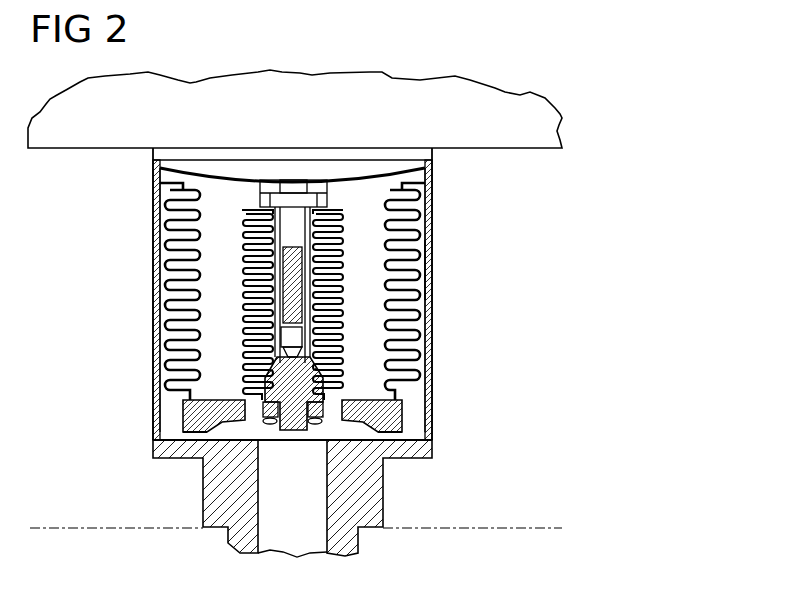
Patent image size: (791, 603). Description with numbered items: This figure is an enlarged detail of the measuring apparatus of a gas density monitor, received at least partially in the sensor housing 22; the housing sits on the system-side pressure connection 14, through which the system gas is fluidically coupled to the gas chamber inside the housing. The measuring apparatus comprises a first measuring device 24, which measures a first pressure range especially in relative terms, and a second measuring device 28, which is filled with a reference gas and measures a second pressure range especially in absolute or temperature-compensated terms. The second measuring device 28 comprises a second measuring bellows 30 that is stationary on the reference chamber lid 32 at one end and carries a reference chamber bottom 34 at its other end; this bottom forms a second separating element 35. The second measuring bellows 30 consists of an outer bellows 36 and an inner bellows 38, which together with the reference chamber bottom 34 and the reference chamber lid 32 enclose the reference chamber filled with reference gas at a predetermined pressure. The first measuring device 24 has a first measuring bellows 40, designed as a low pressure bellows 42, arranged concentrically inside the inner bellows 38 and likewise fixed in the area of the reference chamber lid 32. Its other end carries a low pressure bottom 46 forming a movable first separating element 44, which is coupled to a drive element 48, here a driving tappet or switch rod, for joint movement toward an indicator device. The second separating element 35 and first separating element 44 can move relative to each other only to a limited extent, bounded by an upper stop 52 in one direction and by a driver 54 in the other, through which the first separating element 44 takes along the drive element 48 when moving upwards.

The system-side pressure connection 14 is at (212, 494).
The sensor housing 22 is at (413, 427).
The first measuring device 24 is at (342, 305).
The second measuring device 28 is at (385, 326).
The second measuring bellows 30 is at (432, 276).
The reference chamber lid 32 is at (432, 178).
The reference chamber bottom 34 is at (200, 413).
The second separating element 35 is at (207, 422).
The outer bellows 36 is at (433, 253).
The inner bellows 38 is at (393, 305).
The first measuring bellows 40 is at (343, 289).
The low pressure bellows 42 is at (250, 260).
The first separating element 44 is at (293, 442).
The low pressure bottom 46 is at (285, 372).
The drive element 48 is at (295, 214).
The upper stop 52 is at (306, 424).
The driver 54 is at (266, 422).